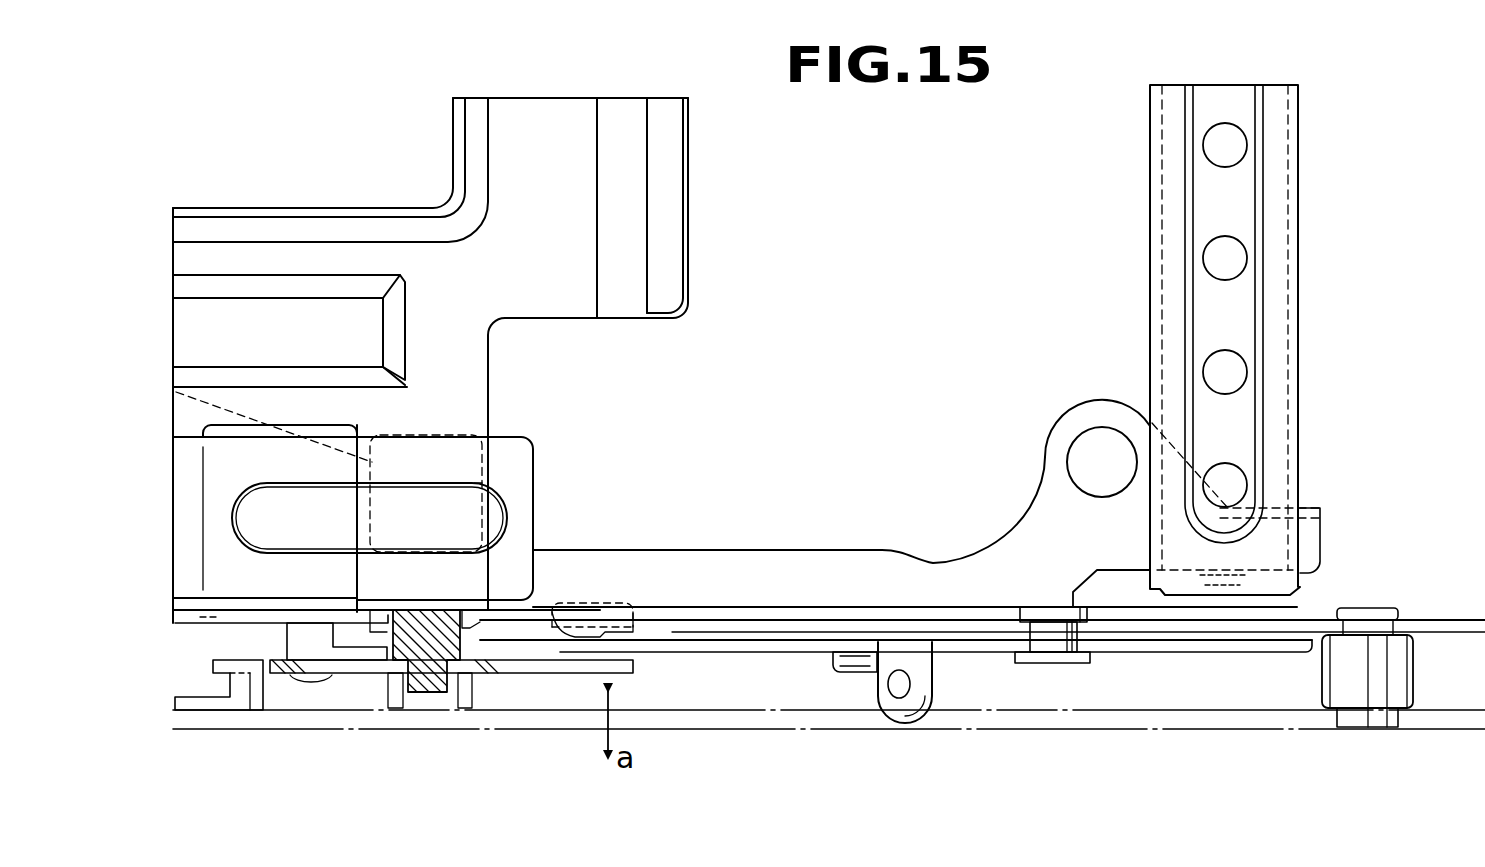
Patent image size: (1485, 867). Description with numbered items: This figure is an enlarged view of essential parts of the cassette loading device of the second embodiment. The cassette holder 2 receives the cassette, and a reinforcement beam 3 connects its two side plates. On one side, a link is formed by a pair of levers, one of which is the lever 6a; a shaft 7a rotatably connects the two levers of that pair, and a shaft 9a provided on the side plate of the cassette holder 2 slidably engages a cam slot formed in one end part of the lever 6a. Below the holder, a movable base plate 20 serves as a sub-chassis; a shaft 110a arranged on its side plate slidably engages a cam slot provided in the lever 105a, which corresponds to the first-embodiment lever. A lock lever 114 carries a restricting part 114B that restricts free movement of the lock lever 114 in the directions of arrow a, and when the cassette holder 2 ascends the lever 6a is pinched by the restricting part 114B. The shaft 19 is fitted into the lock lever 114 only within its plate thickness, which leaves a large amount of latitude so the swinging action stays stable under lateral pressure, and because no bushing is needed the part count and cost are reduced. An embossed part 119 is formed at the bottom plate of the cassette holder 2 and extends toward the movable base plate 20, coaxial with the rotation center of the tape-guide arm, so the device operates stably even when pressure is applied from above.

The cassette holder 2 is at (757, 588).
The reinforcement beam 3 is at (1275, 205).
The lever 6a is at (680, 653).
The shaft 7a is at (853, 673).
The shaft 9a is at (1037, 660).
The shaft 19 is at (420, 690).
The movable base plate 20 is at (1130, 728).
The lever 105a is at (1445, 625).
The shaft 110a is at (1333, 693).
The lock lever 114 is at (535, 668).
The restricting part 114B is at (588, 628).
The embossed part 119 is at (1083, 458).